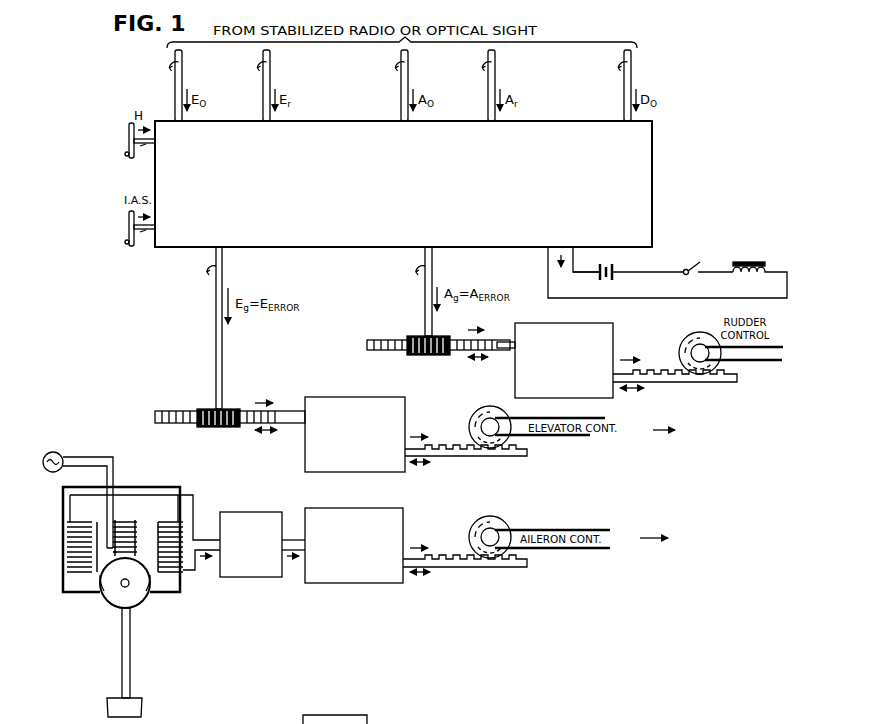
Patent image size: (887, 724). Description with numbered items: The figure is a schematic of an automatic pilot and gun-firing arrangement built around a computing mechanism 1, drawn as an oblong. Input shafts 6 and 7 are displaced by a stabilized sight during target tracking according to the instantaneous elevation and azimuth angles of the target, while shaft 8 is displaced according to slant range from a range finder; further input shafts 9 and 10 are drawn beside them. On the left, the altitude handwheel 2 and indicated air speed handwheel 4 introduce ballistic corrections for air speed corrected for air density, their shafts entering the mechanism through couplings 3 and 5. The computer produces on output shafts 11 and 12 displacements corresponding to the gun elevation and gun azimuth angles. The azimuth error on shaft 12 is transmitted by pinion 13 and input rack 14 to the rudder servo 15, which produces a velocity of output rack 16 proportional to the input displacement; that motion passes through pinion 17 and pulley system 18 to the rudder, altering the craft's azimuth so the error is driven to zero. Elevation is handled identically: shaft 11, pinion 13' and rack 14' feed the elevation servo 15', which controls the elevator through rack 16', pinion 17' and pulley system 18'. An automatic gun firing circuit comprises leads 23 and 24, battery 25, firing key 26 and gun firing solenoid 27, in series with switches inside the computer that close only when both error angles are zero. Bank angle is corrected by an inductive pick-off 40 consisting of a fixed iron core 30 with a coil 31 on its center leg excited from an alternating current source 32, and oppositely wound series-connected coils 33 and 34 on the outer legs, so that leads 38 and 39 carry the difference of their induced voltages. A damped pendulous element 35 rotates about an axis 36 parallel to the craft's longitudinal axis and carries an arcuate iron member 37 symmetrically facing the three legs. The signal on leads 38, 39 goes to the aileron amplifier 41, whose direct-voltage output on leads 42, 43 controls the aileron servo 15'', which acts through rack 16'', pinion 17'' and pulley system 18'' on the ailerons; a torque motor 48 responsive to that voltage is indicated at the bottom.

The computing mechanism 1 is at (652, 139).
The altitude handwheel 2 is at (129, 140).
The altitude input shaft coupling 3 is at (150, 152).
The indicated air speed handwheel 4 is at (129, 227).
The air speed input shaft coupling 5 is at (150, 238).
The elevation input shaft 6 is at (182, 72).
The azimuth input shaft 7 is at (408, 72).
The range input shaft 8 is at (631, 74).
The elevation rate input shaft 9 is at (270, 72).
The azimuth rate input shaft 10 is at (495, 72).
The elevation output shaft 11 is at (222, 265).
The azimuth output shaft 12 is at (432, 265).
The pinion 13 is at (439, 337).
The input rack 14 is at (441, 335).
The rudder servo 15 is at (577, 360).
The output rack 16 is at (675, 385).
The pinion 17 is at (695, 348).
The pulley system 18 is at (749, 367).
The pinion 13' is at (223, 409).
The rack 14' is at (230, 407).
The elevation servo 15' is at (367, 428).
The rack 16' is at (466, 459).
The pinion 17' is at (486, 421).
The pulley system 18' is at (550, 437).
The aileron servo 15'' is at (370, 545).
The rack 16'' is at (465, 570).
The pinion 17'' is at (484, 534).
The pulley system 18'' is at (552, 530).
The lead 23 is at (573, 258).
The lead 24 is at (548, 266).
The battery 25 is at (615, 266).
The firing key 26 is at (683, 268).
The gun firing solenoid 27 is at (768, 268).
The fixed core 30 is at (63, 584).
The coil 31 is at (143, 534).
The source of alternating current 32 is at (43, 468).
The coil 33 is at (158, 556).
The coil 34 is at (67, 540).
The pendulous element 35 is at (130, 650).
The axis 36 is at (128, 586).
The arcuate member 37 is at (110, 600).
The lead 38 is at (193, 520).
The lead 39 is at (195, 570).
The inductive pick-off 40 is at (155, 486).
The aileron amplifier 41 is at (259, 512).
The output lead 42 is at (292, 538).
The output lead 43 is at (290, 553).
The torque motor 48 is at (367, 720).